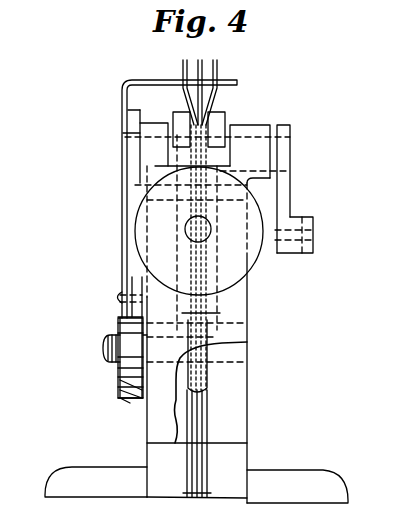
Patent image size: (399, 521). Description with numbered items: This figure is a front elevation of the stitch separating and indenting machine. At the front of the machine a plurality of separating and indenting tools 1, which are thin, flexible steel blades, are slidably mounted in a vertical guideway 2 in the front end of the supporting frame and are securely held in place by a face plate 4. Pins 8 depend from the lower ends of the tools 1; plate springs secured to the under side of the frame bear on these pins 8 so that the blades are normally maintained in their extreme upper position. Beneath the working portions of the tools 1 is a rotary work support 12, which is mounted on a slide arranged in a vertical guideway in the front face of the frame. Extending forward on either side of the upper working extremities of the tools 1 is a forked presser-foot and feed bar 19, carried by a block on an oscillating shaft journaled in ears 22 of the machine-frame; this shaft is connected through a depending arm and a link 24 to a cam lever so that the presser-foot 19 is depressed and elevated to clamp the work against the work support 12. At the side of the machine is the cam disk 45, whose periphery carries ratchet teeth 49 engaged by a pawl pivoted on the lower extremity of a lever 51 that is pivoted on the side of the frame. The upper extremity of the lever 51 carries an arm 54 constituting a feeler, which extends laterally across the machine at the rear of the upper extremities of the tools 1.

The separating and indenting tools 1 is at (180, 68).
The vertical guideway 2 is at (207, 378).
The face plate 4 is at (155, 414).
The pins 8 is at (187, 459).
The rotary work support 12 is at (255, 262).
The forked presser-foot and feed bar 19 is at (221, 121).
The ears 22 is at (252, 129).
The link 24 is at (298, 217).
The cam disk 45 is at (118, 369).
The ratchet teeth 49 is at (117, 400).
The lever 51 is at (123, 245).
The arm 54 is at (148, 80).